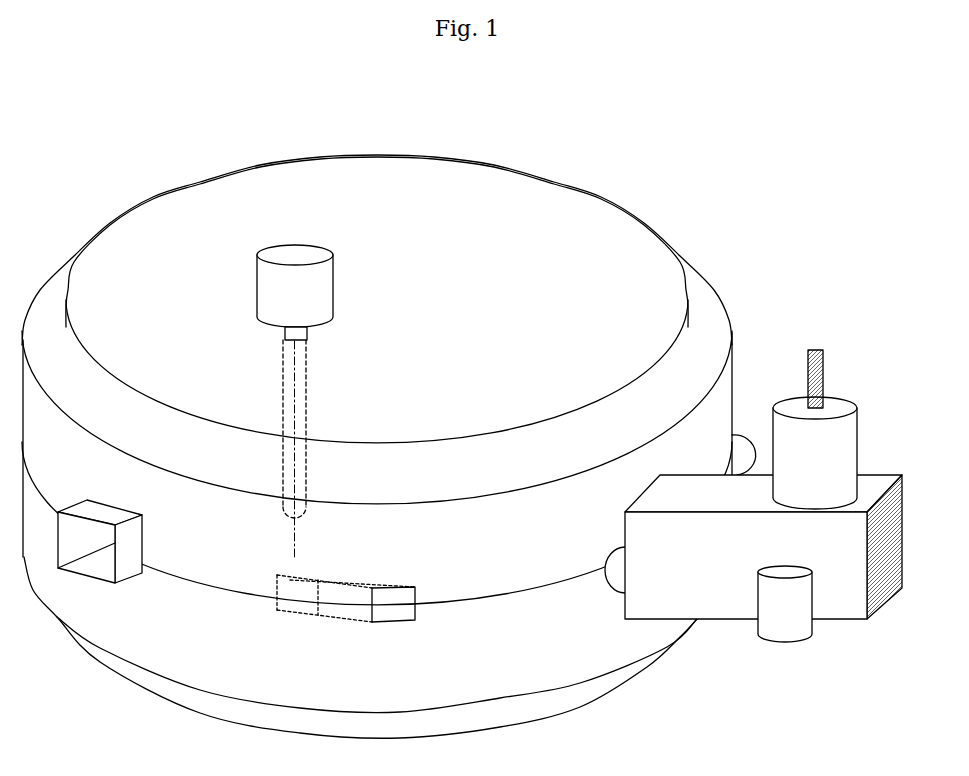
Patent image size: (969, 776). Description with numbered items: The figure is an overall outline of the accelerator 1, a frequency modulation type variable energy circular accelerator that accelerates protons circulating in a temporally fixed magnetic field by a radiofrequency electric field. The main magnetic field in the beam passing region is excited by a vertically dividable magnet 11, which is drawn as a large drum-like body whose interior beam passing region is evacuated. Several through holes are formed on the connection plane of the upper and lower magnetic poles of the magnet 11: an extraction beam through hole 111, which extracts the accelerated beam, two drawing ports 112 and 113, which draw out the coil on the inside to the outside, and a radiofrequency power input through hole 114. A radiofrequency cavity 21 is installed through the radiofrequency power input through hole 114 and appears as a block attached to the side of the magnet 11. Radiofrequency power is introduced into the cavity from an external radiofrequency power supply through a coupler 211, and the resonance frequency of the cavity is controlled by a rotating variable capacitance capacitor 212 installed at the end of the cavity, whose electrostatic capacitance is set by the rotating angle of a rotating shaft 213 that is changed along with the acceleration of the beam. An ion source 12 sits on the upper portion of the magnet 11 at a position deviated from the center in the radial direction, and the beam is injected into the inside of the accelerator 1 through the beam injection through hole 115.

The accelerator 1 is at (97, 170).
The magnet 11 is at (437, 183).
The ion source 12 is at (337, 247).
The radiofrequency cavity 21 is at (710, 595).
The extraction beam through hole 111 is at (367, 627).
The drawing port 112 is at (53, 587).
The drawing port 113 is at (737, 403).
The radiofrequency power input through hole 114 is at (602, 595).
The beam injection through hole 115 is at (313, 413).
The coupler 211 is at (808, 622).
The rotating variable capacitance capacitor 212 is at (853, 420).
The rotating shaft 213 is at (832, 347).